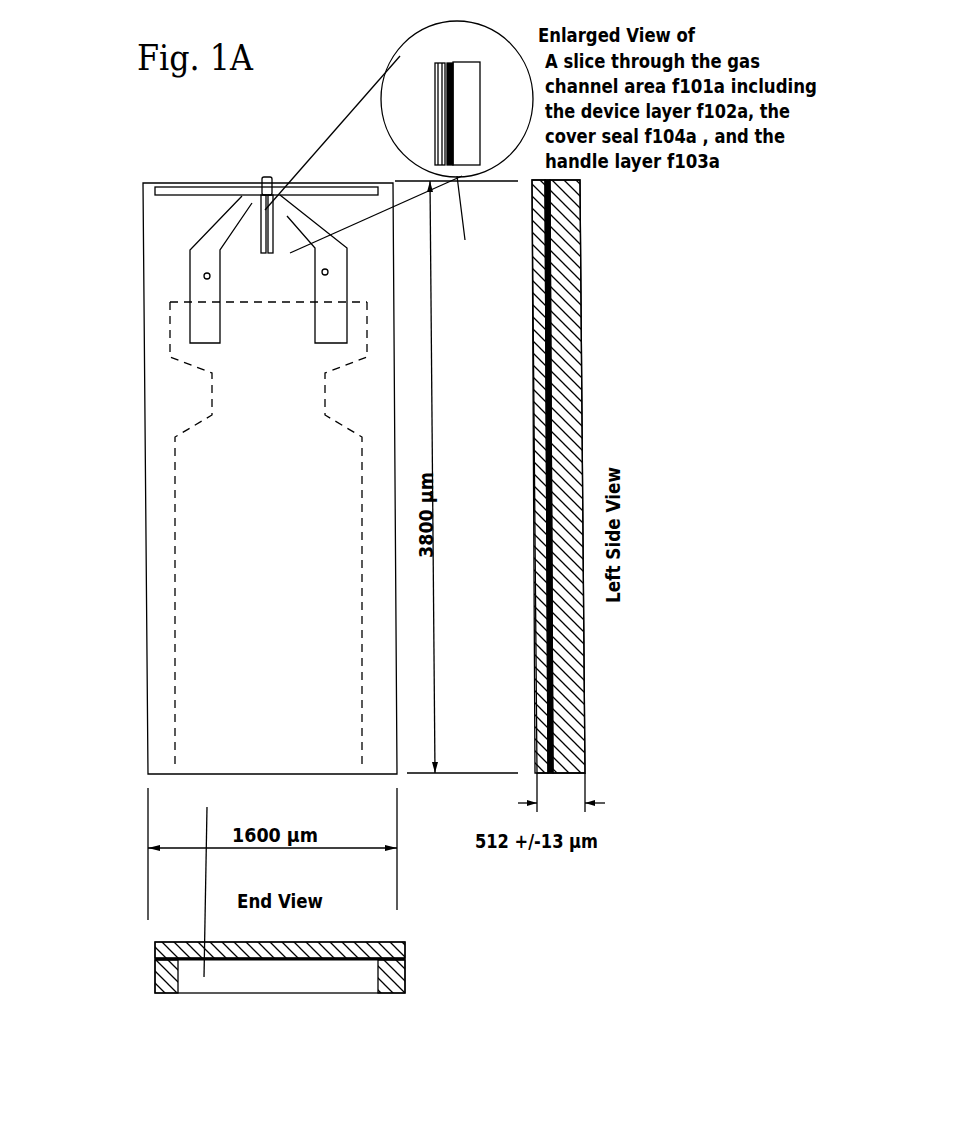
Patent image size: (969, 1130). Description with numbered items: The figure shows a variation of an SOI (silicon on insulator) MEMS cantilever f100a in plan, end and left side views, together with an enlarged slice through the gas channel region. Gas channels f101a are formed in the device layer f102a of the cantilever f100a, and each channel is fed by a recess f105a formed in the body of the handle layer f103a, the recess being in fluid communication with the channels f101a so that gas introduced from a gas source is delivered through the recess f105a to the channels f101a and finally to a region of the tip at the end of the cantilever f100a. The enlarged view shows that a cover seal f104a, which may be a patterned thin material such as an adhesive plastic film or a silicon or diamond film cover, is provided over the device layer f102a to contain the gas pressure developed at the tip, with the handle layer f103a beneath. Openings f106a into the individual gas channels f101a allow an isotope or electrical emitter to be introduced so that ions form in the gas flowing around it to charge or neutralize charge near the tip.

The MEMS cantilever f100a is at (232, 478).
The gas channels f101a is at (435, 72).
The device layer f102a is at (532, 258).
The handle layer f103a is at (224, 967).
The cover seal f104a is at (433, 126).
The recess f105a is at (188, 785).
The openings f106a is at (320, 275).